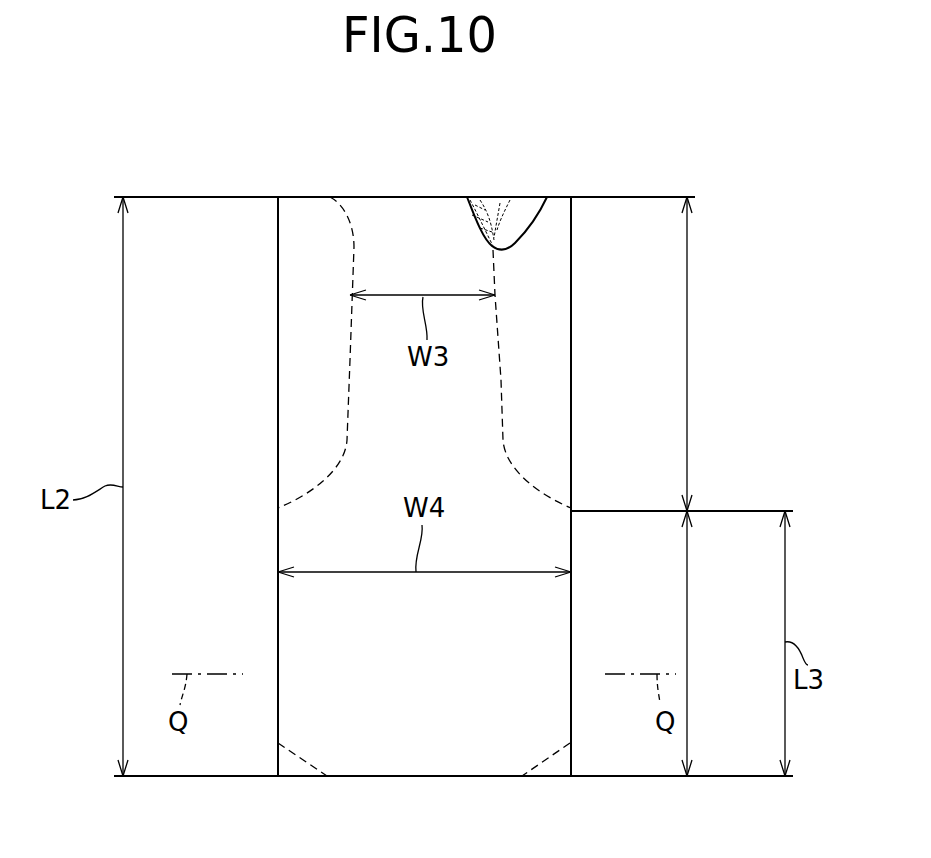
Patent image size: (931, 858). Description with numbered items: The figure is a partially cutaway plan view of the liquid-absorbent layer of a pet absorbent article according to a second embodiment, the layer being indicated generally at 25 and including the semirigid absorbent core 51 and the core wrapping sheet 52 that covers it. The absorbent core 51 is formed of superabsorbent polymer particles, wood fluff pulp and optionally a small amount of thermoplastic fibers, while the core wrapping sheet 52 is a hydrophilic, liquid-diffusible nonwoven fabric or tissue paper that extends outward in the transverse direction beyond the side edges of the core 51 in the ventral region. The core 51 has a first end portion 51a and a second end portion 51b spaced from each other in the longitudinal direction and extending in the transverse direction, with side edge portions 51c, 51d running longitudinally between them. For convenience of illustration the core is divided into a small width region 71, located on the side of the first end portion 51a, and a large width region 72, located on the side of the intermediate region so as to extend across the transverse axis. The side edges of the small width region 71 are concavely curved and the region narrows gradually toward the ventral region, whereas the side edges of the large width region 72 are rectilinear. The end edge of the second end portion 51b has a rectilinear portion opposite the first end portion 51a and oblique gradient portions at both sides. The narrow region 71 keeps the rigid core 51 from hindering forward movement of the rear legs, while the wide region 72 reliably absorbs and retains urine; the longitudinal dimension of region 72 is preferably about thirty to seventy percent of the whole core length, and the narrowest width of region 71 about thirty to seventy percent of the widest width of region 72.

The absorbent article 25 is at (573, 158).
The absorbent core 51 is at (490, 230).
The first end portion 51a is at (440, 220).
The second end portion 51b is at (422, 743).
The side edge portion 51c is at (278, 608).
The side edge portion 51d is at (571, 623).
The core wrapping sheet 52 is at (540, 335).
The small width region 71 is at (687, 353).
The large width region 72 is at (687, 640).